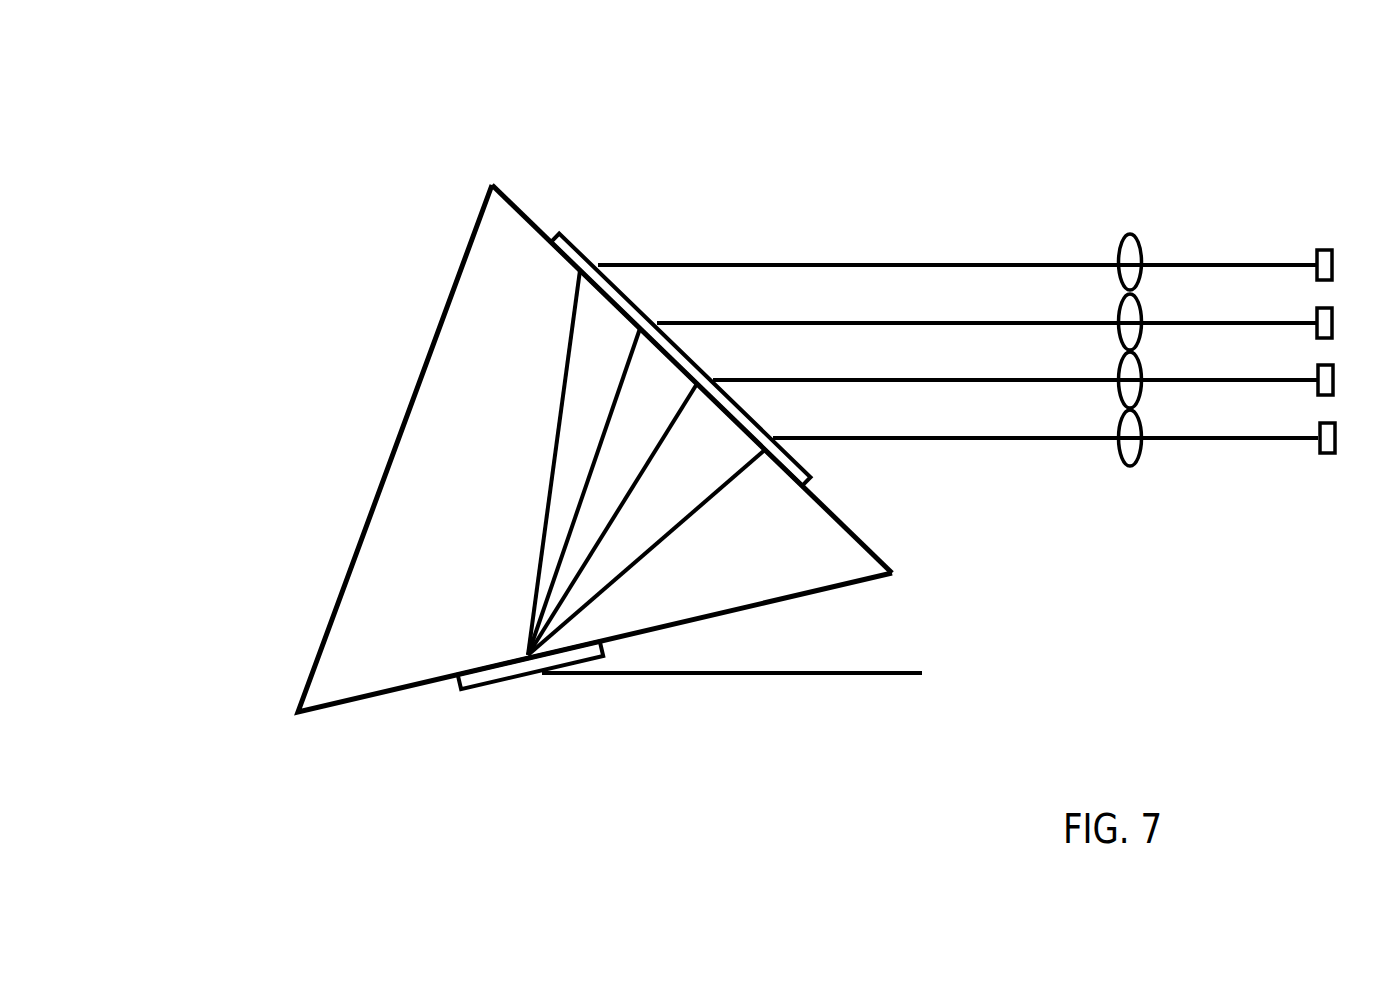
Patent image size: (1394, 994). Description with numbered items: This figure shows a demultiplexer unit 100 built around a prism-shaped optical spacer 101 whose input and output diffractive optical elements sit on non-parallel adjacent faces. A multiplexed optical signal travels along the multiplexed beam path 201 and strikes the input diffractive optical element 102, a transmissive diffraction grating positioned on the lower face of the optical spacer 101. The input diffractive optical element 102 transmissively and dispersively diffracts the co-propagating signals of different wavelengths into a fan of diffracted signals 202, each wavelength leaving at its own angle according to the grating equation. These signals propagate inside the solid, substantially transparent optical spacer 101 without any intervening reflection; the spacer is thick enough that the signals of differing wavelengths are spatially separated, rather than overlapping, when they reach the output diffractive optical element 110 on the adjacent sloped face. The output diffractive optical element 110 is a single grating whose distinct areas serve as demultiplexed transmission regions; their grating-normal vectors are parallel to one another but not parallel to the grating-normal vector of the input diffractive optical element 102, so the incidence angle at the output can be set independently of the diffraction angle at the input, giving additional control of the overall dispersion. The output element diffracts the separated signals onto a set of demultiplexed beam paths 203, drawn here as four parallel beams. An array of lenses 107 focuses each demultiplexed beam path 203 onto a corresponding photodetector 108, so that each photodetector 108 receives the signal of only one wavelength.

The demultiplexer unit 100 is at (315, 422).
The optical spacer 101 is at (776, 553).
The input diffractive optical element 102 is at (501, 676).
The array of lenses 107 is at (1139, 495).
The array of photodetectors 108 is at (1335, 480).
The output diffractive optical element 110 is at (635, 315).
The multiplexed beam path 201 is at (815, 674).
The fan of diffracted signals 202 is at (502, 393).
The demultiplexed beam paths 203 is at (992, 235).